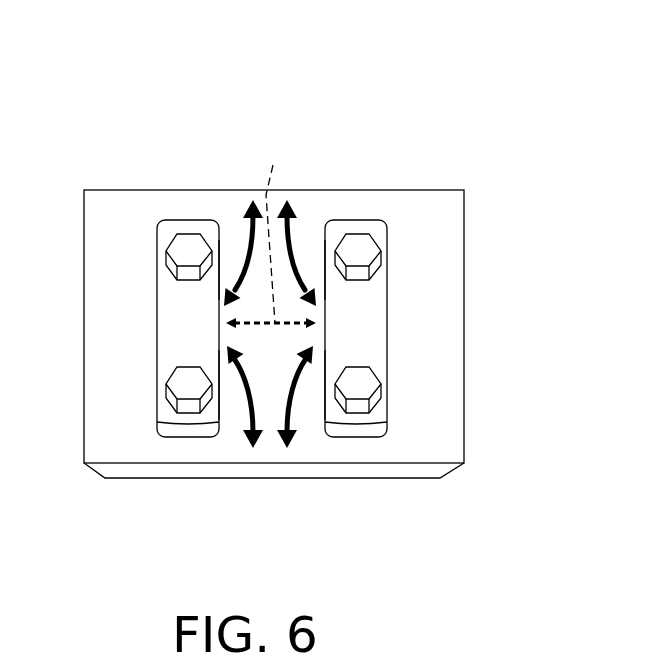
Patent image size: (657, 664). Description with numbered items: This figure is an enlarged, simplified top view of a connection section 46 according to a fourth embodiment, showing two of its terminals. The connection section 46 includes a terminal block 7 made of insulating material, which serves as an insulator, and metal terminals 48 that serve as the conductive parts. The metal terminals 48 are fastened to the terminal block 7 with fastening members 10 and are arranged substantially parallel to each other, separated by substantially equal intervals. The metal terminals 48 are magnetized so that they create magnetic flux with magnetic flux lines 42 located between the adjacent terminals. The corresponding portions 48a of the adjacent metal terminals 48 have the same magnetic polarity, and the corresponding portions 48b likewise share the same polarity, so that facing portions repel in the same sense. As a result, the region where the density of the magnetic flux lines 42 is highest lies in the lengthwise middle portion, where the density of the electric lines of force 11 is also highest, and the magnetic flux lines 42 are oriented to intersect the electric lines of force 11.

The connection section 46 is at (489, 95).
The terminal block 7 is at (448, 200).
The metal terminals 48 is at (161, 210).
The corresponding portions of adjacent metal terminals 48a is at (223, 273).
The corresponding portions of adjacent metal terminals 48b is at (220, 372).
The fastening members 10 is at (185, 260).
The electric lines of force 11 is at (272, 232).
The magnetic flux lines 42 is at (238, 210).